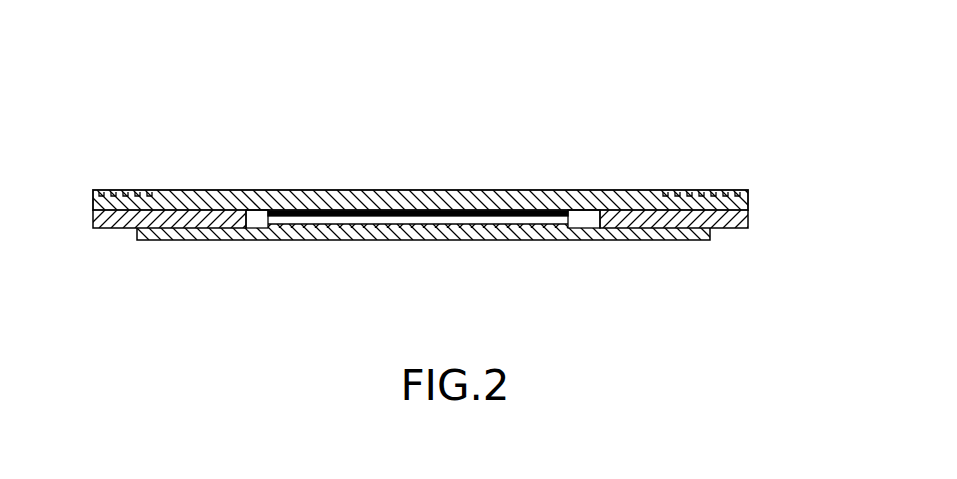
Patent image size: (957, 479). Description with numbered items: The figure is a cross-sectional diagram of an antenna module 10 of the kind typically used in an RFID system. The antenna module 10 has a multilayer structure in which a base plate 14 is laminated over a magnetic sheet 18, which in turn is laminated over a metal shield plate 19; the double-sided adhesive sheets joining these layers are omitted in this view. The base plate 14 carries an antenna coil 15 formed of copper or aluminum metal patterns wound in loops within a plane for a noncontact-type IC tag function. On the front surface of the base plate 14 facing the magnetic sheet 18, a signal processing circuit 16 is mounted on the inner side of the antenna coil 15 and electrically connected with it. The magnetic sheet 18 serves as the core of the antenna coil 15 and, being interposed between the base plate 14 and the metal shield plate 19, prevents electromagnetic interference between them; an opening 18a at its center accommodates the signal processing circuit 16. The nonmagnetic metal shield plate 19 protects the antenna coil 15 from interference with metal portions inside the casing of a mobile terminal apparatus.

The antenna module 10 is at (728, 153).
The base plate 14 is at (627, 192).
The antenna coil 15 is at (107, 190).
The signal processing circuit 16 is at (410, 222).
The magnetic sheet 18 is at (748, 227).
The opening 18a is at (256, 227).
The metal shield plate 19 is at (710, 240).